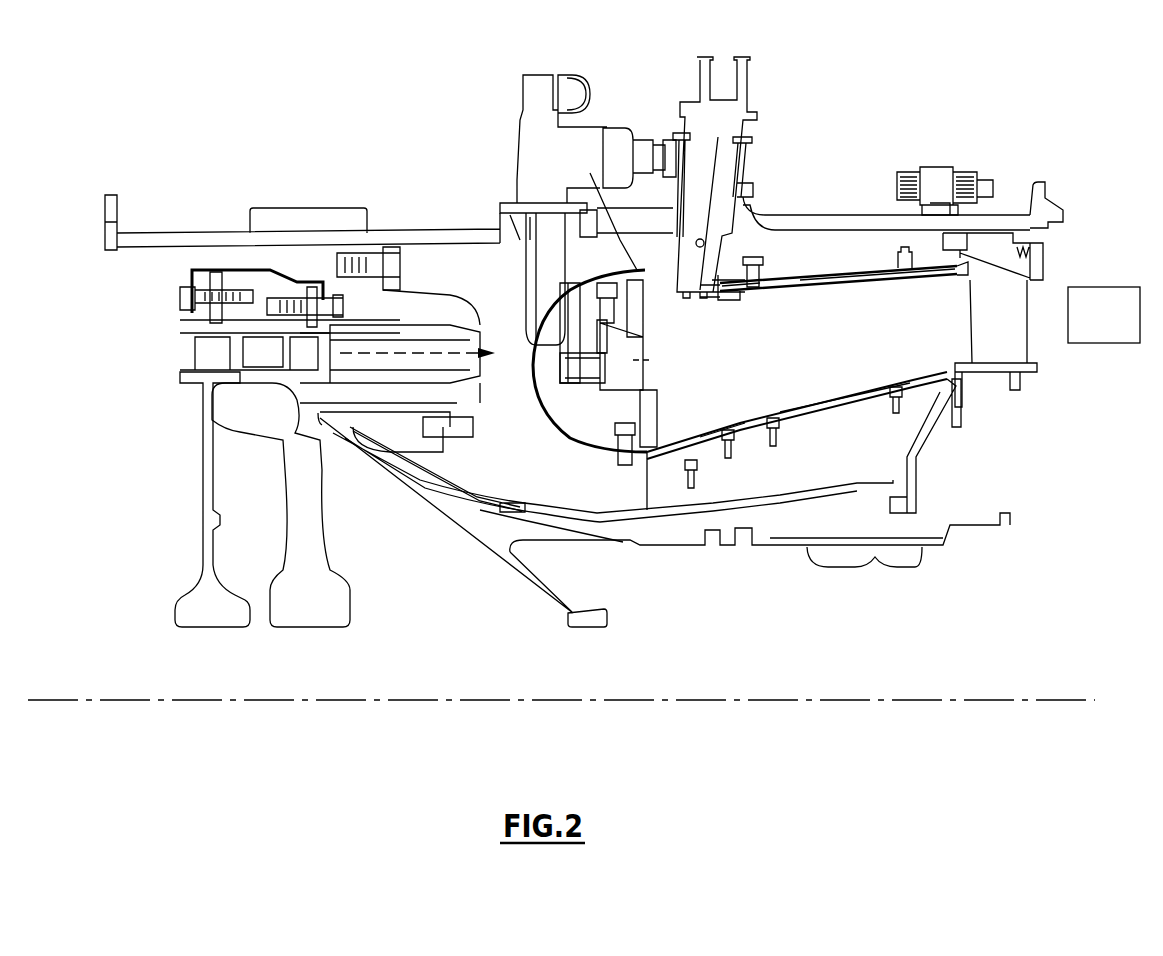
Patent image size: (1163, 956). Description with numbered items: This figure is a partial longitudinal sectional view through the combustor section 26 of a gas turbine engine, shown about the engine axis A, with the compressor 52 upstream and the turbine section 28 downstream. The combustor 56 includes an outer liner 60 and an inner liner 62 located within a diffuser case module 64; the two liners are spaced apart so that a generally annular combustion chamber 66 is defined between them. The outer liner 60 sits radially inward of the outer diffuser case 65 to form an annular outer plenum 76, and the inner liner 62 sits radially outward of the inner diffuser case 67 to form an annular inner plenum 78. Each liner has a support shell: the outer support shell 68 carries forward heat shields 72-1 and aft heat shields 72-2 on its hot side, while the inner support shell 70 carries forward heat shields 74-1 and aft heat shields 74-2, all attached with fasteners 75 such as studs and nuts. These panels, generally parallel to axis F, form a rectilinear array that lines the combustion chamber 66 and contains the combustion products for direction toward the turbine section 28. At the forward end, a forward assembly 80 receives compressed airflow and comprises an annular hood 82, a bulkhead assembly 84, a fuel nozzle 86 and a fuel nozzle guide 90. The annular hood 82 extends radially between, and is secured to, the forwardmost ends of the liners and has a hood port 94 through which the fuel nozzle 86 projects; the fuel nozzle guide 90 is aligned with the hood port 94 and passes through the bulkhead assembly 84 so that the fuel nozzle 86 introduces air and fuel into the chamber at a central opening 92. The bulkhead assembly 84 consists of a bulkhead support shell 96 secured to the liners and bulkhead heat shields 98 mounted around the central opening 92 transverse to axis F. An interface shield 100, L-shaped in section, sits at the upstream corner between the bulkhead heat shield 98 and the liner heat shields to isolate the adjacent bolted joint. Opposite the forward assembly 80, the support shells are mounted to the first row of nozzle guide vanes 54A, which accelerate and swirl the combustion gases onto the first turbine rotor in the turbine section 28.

The combustor section 26 is at (916, 114).
The turbine section 28 is at (1104, 315).
The high pressure compressor 52 is at (175, 434).
The nozzle guide vanes 54A is at (1022, 324).
The combustor 56 is at (905, 235).
The outer liner 60 is at (848, 265).
The inner liner 62 is at (832, 412).
The diffuser case module 64 is at (788, 207).
The outer diffuser case 65 is at (812, 215).
The combustion chamber 66 is at (818, 331).
The inner diffuser case 67 is at (780, 497).
The outer support shell 68 is at (807, 280).
The inner support shell 70 is at (790, 407).
The forward heat shields 72-1 is at (722, 290).
The aft heat shields 72-2 is at (842, 283).
The forward heat shields 74-1 is at (710, 413).
The aft heat shields 74-2 is at (850, 383).
The fasteners 75 is at (740, 433).
The annular outer plenum 76 is at (802, 264).
The annular inner plenum 78 is at (748, 484).
The forward assembly 80 is at (588, 452).
The annular hood 82 is at (572, 443).
The bulkhead assembly 84 is at (655, 300).
The fuel nozzle 86 is at (530, 187).
The fuel nozzle guide 90 is at (670, 390).
The central opening 92 is at (647, 350).
The hood port 94 is at (557, 400).
The bulkhead support shell 96 is at (636, 417).
The bulkhead heat shield 98 is at (658, 423).
The interface shield 100 is at (590, 173).
The axis F is at (700, 352).
The engine central longitudinal axis A is at (855, 700).